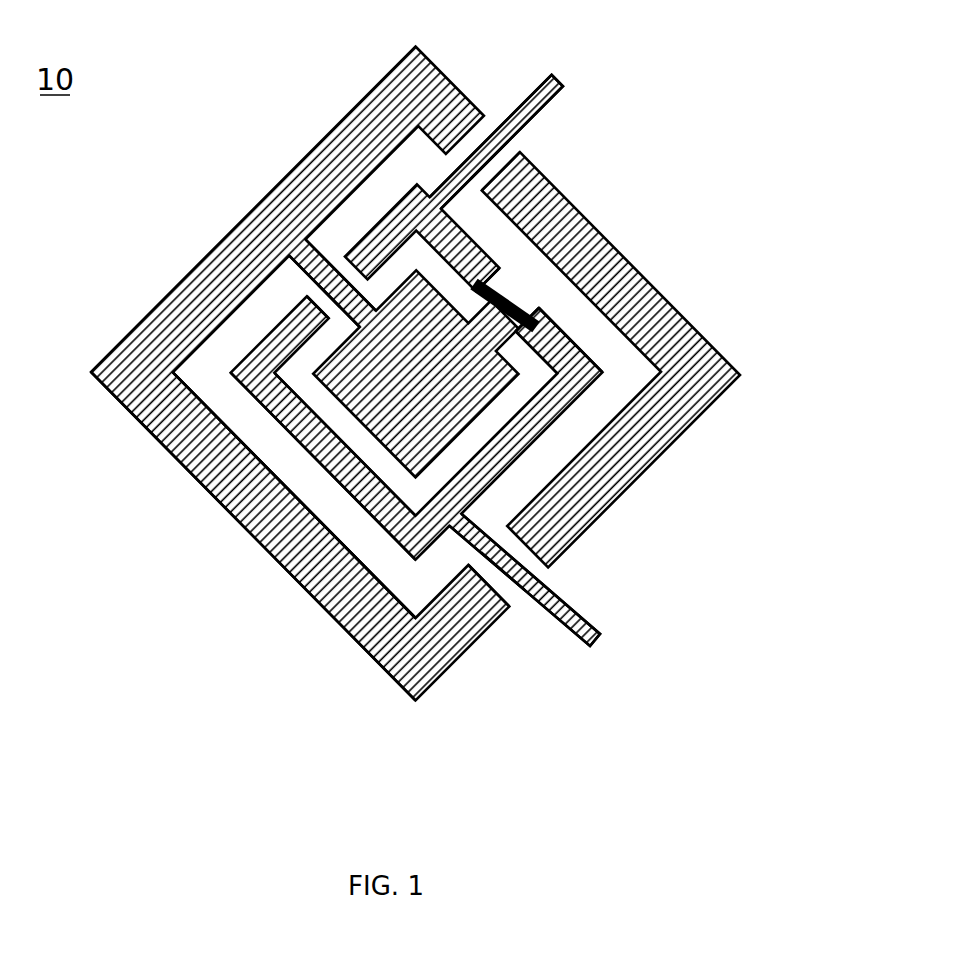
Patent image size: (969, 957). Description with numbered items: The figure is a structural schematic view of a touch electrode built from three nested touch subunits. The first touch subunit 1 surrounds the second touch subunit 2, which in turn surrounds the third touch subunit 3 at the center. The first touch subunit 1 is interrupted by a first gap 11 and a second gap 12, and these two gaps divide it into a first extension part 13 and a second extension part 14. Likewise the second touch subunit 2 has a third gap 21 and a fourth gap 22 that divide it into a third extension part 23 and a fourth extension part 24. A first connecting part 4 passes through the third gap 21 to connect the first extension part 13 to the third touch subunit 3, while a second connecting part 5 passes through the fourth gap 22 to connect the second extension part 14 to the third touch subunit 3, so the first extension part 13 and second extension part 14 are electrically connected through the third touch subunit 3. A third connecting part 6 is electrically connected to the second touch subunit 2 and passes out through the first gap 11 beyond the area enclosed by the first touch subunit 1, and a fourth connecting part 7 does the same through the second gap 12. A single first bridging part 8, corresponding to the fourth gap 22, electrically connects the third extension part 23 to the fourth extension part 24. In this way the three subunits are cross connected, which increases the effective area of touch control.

The first touch subunit 1 is at (415, 374).
The second touch subunit 2 is at (334, 455).
The third touch subunit 3 is at (294, 495).
The first connecting part 4 is at (332, 283).
The second connecting part 5 is at (543, 272).
The third connecting part 6 is at (525, 580).
The fourth connecting part 7 is at (496, 142).
The first bridging part 8 is at (559, 352).
The first gap 11 is at (496, 577).
The second gap 12 is at (495, 166).
The first extension part 13 is at (273, 516).
The second extension part 14 is at (534, 359).
The third gap 21 is at (323, 301).
The fourth gap 22 is at (507, 299).
The third extension part 23 is at (481, 438).
The fourth extension part 24 is at (483, 201).